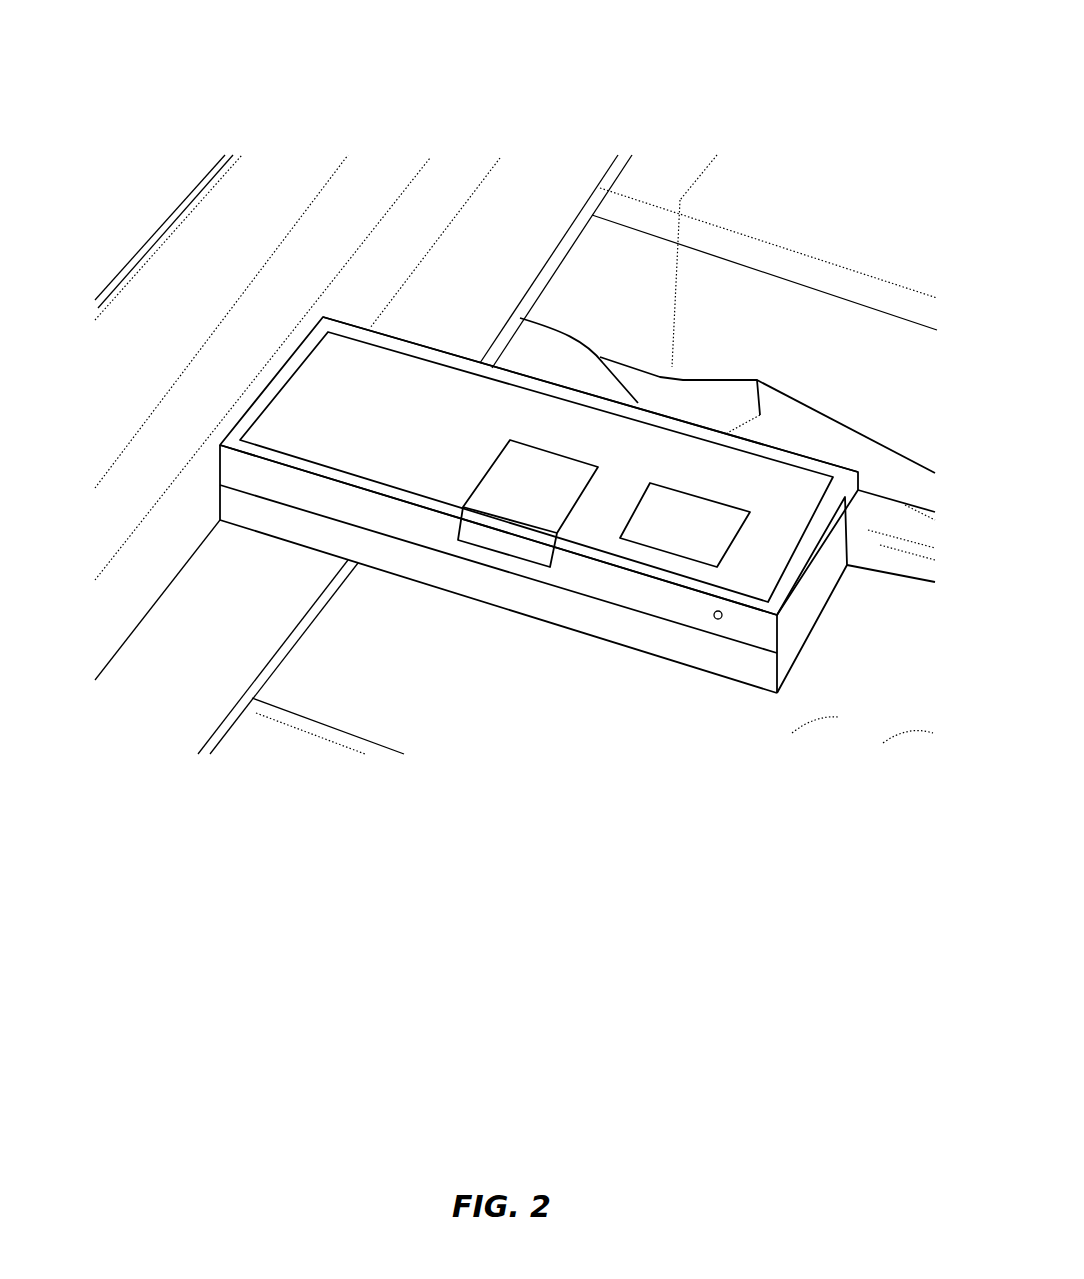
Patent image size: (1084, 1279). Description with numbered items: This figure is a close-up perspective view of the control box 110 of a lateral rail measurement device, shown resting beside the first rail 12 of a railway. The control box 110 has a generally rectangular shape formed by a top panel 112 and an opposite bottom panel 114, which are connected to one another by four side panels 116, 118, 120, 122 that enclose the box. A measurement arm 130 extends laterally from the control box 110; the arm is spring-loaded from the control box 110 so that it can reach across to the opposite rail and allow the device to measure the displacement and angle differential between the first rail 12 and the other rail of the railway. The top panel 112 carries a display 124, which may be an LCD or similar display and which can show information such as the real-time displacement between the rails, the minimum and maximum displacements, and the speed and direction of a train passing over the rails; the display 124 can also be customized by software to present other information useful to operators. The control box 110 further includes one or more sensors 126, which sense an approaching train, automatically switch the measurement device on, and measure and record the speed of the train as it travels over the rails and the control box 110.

The first rail 12 is at (240, 268).
The control box 110 is at (378, 388).
The top panel 112 is at (465, 400).
The bottom panel 114 is at (317, 551).
The side panel 116 is at (395, 555).
The side panel 118 is at (808, 575).
The side panel 120 is at (278, 362).
The side panel 122 is at (658, 413).
The display 124 is at (850, 527).
The sensors 126 is at (510, 487).
The measurement arm 130 is at (905, 515).